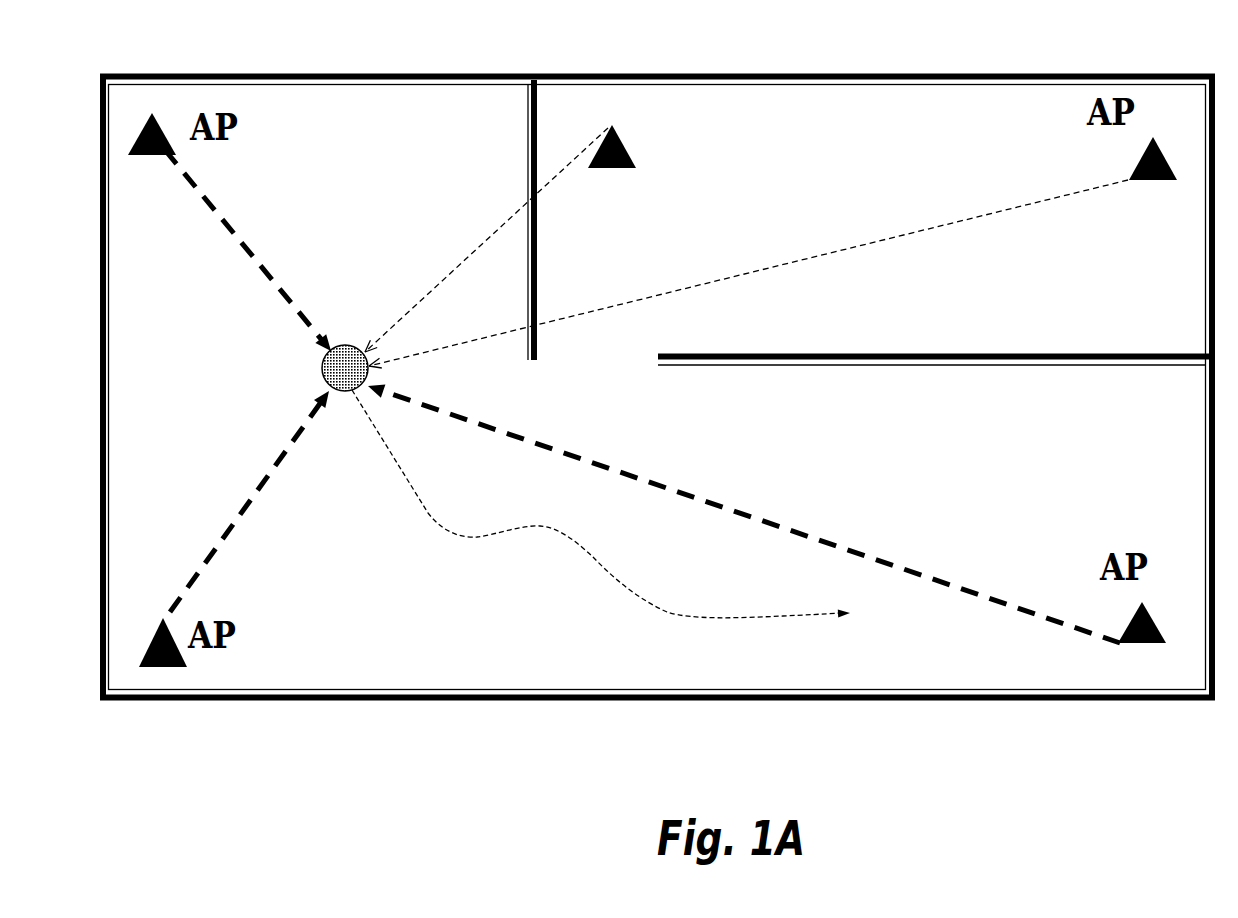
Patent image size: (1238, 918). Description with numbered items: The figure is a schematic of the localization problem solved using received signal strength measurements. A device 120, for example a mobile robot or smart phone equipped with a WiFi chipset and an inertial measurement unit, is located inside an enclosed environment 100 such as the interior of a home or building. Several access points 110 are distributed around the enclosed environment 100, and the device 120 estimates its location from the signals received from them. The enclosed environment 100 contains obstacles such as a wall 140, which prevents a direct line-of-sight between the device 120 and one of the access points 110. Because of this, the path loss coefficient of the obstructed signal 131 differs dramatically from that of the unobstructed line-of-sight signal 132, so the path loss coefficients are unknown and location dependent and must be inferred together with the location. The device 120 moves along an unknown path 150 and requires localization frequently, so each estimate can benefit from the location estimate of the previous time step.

The enclosed environment 100 is at (382, 75).
The access point 110 is at (617, 131).
The device 120 is at (348, 344).
The path loss coefficient 131 is at (758, 272).
The path loss coefficient 132 is at (245, 236).
The wall 140 is at (982, 365).
The path 150 is at (430, 515).